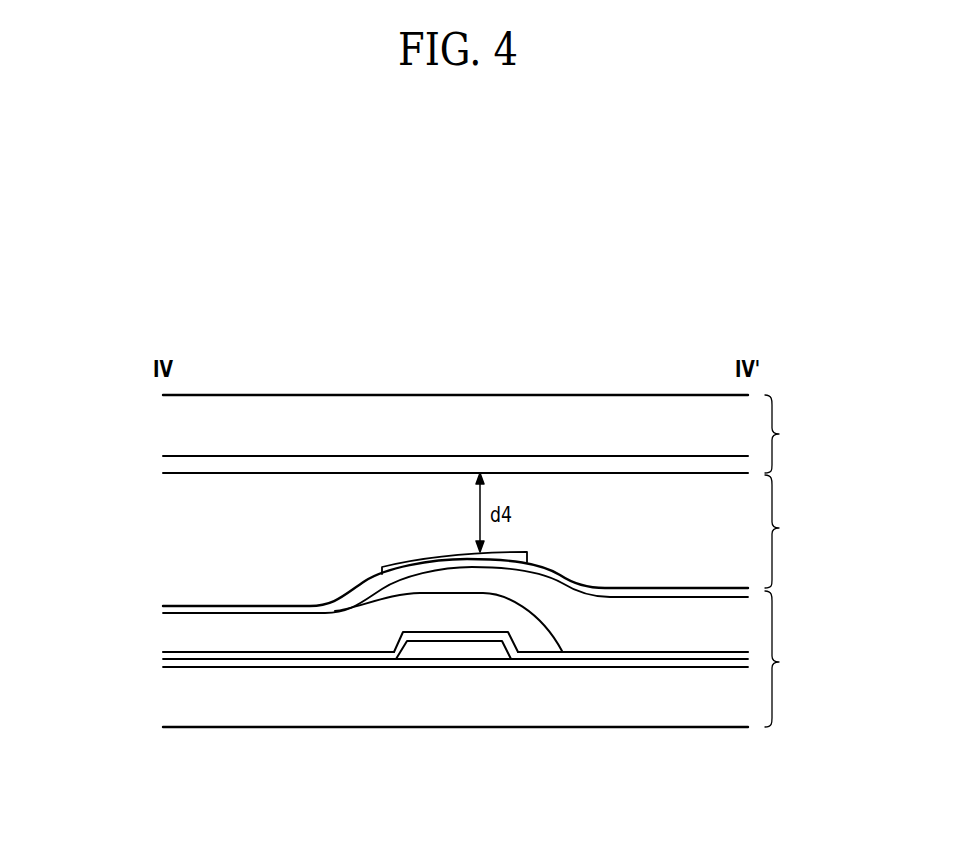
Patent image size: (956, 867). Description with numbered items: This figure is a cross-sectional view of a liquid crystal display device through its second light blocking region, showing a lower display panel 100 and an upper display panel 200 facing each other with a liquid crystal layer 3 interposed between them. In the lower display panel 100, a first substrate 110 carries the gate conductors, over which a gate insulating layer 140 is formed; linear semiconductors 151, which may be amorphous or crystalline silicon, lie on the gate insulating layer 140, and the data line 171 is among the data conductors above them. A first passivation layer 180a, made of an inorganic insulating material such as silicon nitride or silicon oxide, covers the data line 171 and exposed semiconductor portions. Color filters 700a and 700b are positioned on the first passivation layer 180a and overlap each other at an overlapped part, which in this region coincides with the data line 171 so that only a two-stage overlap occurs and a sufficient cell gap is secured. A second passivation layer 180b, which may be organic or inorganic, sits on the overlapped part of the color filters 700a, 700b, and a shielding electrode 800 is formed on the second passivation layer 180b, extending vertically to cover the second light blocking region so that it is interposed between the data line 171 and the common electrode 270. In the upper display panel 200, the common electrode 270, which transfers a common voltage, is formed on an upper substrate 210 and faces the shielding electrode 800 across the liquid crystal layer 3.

The lower display panel 100 is at (794, 659).
The first substrate 110 is at (175, 714).
The gate insulating layer 140 is at (167, 667).
The linear semiconductor 151 is at (485, 653).
The data line 171 is at (423, 643).
The first passivation layer 180a is at (165, 653).
The second passivation layer 180b is at (164, 610).
The upper display panel 200 is at (794, 434).
The upper substrate 210 is at (164, 428).
The common electrode 270 is at (164, 464).
The liquid crystal layer 3 is at (783, 531).
The color filter 700a is at (173, 636).
The color filter 700b is at (678, 625).
The shielding electrode 800 is at (520, 552).